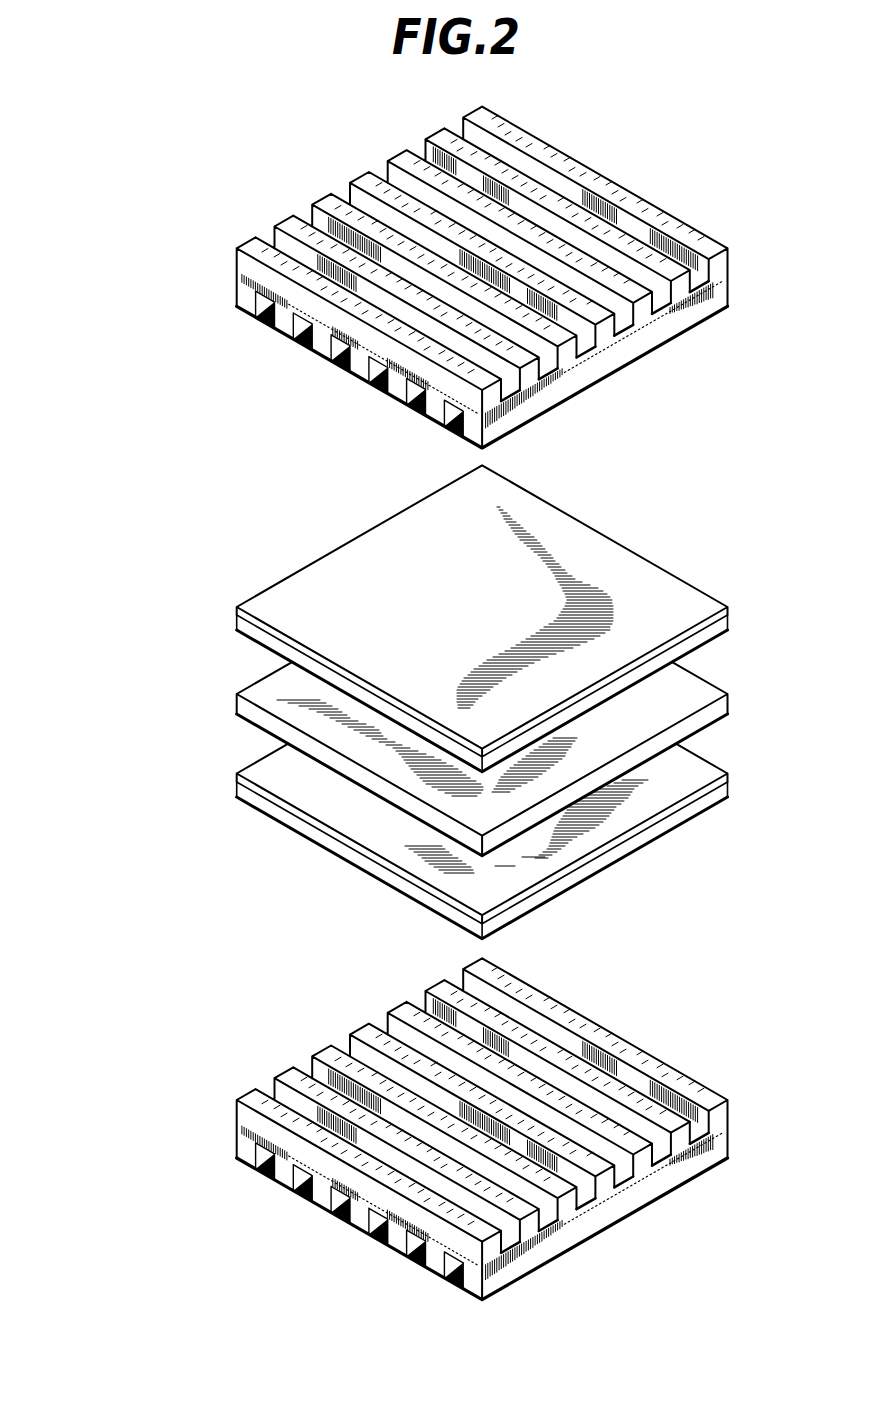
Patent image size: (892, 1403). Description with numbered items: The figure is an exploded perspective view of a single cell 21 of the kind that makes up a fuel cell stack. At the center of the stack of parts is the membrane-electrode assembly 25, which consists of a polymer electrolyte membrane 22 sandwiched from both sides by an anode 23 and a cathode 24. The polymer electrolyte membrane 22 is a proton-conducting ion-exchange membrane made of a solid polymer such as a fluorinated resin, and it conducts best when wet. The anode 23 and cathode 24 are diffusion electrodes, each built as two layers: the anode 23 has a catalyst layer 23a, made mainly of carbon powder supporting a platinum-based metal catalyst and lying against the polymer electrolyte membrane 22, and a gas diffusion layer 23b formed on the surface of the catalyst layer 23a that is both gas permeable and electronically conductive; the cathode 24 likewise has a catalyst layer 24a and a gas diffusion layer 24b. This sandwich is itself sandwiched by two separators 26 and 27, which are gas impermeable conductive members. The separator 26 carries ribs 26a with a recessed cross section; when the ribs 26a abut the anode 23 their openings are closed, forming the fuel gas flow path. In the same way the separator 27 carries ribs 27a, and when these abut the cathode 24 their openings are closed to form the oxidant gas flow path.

The cell 21 is at (91, 199).
The polymer electrolyte membrane 22 is at (237, 703).
The anode 23 is at (148, 582).
The catalyst layer 23a is at (237, 621).
The gas diffusion layer 23b is at (237, 611).
The cathode 24 is at (148, 752).
The catalyst layer 24a is at (237, 779).
The gas diffusion layer 24b is at (237, 788).
The membrane-electrode assembly 25 is at (103, 600).
The separator 26 is at (237, 274).
The ribs 26a is at (302, 337).
The separator 27 is at (730, 1142).
The ribs 27a is at (678, 1137).